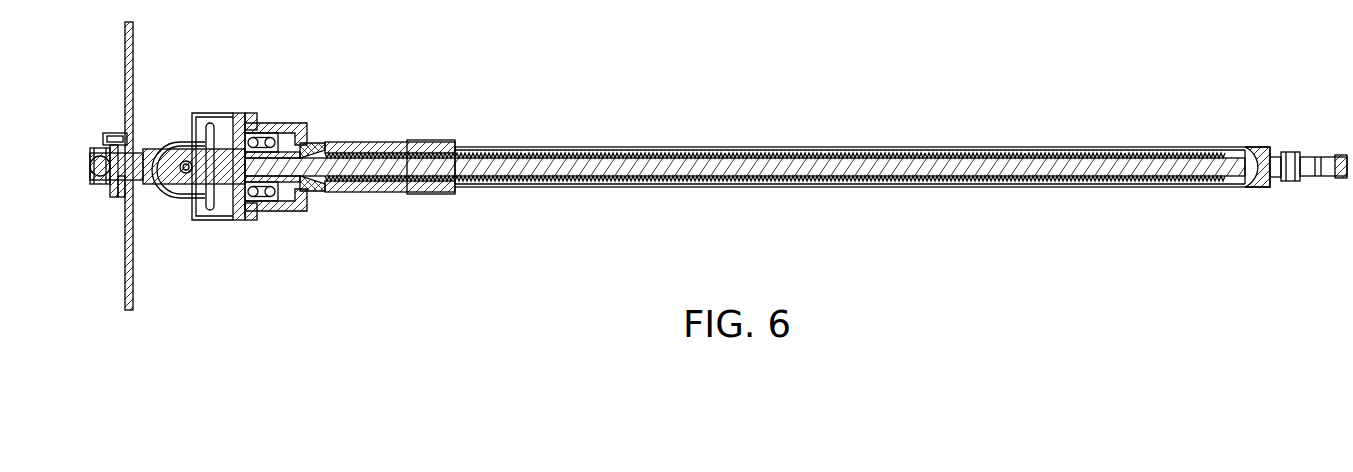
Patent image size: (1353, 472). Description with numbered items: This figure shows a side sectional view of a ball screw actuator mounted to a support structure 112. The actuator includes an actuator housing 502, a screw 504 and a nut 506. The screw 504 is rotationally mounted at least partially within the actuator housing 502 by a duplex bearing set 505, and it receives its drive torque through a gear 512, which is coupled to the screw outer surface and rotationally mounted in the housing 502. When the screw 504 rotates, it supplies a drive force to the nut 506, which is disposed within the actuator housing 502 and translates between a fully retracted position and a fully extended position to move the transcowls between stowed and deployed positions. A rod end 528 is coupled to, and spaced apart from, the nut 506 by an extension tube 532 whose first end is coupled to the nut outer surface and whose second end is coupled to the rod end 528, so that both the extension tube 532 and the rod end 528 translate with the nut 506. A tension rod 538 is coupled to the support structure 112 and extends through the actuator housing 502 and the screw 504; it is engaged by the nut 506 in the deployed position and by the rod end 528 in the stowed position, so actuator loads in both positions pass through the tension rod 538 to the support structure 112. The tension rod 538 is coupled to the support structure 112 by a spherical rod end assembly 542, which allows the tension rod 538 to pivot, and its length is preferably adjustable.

The support structure 112 is at (134, 32).
The actuator housing 502 is at (247, 113).
The screw 504 is at (575, 153).
The duplex bearing set 505 is at (260, 137).
The nut 506 is at (372, 142).
The gear 512 is at (210, 128).
The rod end 528 is at (1290, 150).
The extension tube 532 is at (777, 150).
The tension rod 538 is at (1052, 163).
The spherical rod end assembly 542 is at (100, 203).